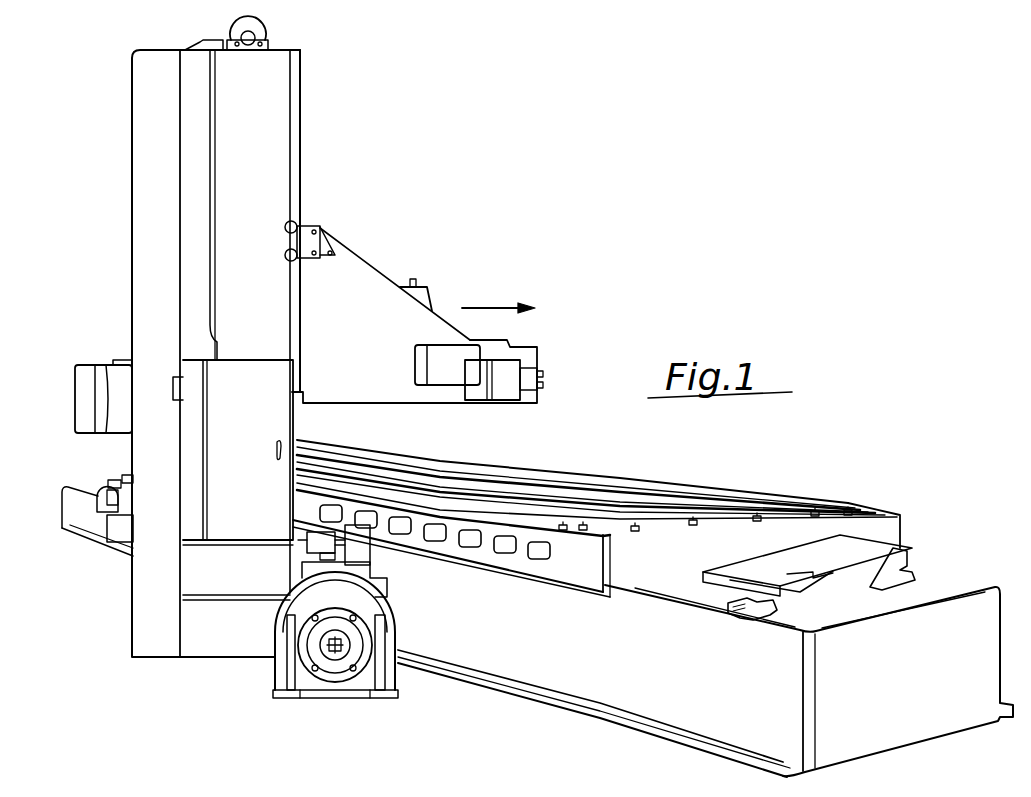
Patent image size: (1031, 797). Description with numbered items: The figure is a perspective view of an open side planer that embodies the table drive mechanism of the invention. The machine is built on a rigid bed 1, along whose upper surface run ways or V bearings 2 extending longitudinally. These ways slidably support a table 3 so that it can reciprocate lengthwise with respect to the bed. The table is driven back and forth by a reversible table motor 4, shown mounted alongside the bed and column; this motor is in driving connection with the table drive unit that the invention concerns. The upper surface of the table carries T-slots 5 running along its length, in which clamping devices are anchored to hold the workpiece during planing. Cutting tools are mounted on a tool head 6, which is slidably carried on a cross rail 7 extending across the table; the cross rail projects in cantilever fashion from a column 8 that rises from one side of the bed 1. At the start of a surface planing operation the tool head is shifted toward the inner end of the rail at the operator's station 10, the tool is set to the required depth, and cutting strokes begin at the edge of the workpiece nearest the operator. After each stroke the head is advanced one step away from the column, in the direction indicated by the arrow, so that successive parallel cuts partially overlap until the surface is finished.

The bed 1 is at (593, 680).
The ways or V bearings 2 is at (883, 570).
The table 3 is at (765, 497).
The table motor 4 is at (286, 657).
The T-slots 5 is at (627, 497).
The tool head 6 is at (430, 291).
The cross rail 7 is at (348, 268).
The column 8 is at (148, 140).
The operator's station 10 is at (123, 348).